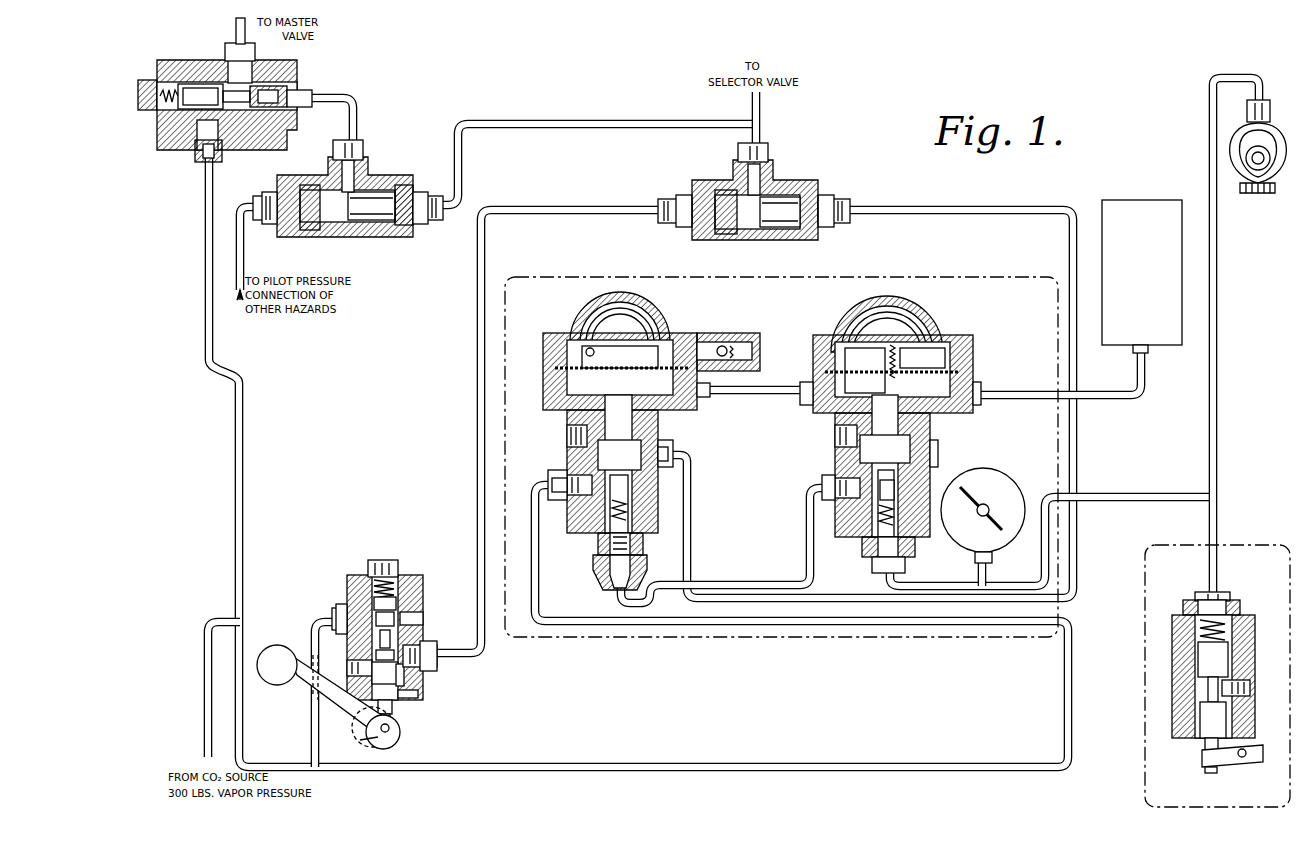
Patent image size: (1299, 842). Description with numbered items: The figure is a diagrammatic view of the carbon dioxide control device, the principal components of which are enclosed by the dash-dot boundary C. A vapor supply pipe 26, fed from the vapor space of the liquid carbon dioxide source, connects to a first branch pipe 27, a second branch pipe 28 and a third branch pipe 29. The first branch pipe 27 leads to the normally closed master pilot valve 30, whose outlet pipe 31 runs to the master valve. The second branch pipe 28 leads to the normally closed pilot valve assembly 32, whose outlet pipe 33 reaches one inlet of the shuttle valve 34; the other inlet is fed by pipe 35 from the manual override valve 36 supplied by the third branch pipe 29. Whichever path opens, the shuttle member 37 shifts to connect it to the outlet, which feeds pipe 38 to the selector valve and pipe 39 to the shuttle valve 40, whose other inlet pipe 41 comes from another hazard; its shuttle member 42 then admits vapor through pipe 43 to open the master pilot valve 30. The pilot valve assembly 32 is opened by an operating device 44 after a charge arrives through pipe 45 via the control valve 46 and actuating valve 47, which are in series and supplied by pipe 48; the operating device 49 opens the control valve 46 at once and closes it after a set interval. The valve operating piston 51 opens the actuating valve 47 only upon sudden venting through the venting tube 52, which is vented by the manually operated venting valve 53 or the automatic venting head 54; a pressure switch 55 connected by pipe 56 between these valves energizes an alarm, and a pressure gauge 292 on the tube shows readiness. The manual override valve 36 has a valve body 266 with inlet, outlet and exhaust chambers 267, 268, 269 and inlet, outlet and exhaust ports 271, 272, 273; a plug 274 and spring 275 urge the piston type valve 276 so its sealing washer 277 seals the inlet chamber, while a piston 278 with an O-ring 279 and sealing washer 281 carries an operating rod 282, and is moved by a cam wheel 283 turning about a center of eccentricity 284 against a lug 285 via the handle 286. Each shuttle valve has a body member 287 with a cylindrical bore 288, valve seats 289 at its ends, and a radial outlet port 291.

The vapor supply pipe 26 is at (204, 642).
The first branch pipe 27 is at (234, 440).
The second branch pipe 28 is at (592, 764).
The third branch pipe 29 is at (312, 633).
The master pilot valve 30 is at (225, 99).
The pipe 31 is at (234, 36).
The pilot valve assembly 32 is at (645, 441).
The pipe 33 is at (692, 518).
The shuttle valve 34 is at (755, 202).
The pipe 35 is at (477, 408).
The manual override valve 36 is at (396, 632).
The shuttle member 37 is at (728, 240).
The pipe 38 is at (762, 100).
The pipe 39 is at (588, 130).
The shuttle valve 40 is at (550, 201).
The pipe 41 is at (244, 258).
The shuttle member 42 is at (334, 223).
The pipe 43 is at (358, 112).
The operating device 44 is at (663, 311).
The pipe 45 is at (728, 394).
The control valve 46 is at (822, 416).
The actuating valve 47 is at (888, 434).
The pipe 48 is at (742, 583).
The operating device 49 is at (930, 311).
The valve operating piston 51 is at (910, 482).
The venting tube 52 is at (1222, 304).
The venting valve 53 is at (1170, 660).
The venting head 54 is at (1283, 178).
The pressure switch 55 is at (1172, 345).
The pipe 56 is at (1097, 400).
The valve body 266 is at (420, 700).
The inlet chamber 267 is at (423, 618).
The outlet chamber 268 is at (380, 650).
The exhaust chamber 269 is at (425, 677).
The inlet port 271 is at (348, 604).
The outlet port 272 is at (402, 650).
The exhaust port 273 is at (351, 737).
The plug 274 is at (370, 568).
The spring 275 is at (383, 560).
The piston type valve 276 is at (408, 578).
The sealing washer 277 is at (422, 600).
The piston 278 is at (396, 706).
The O-ring 279 is at (398, 705).
The sealing washer 281 is at (425, 688).
The operating rod 282 is at (382, 660).
The cam wheel 283 is at (395, 747).
The center of eccentricity 284 is at (392, 730).
The lug 285 is at (370, 745).
The handle 286 is at (346, 705).
The body member 287 is at (402, 237).
The cylindrical bore 288 is at (365, 237).
The valve seats 289 is at (290, 196).
The outlet port 291 is at (356, 172).
The pressure gauge 292 is at (1000, 480).
The control unit boundary C is at (828, 645).